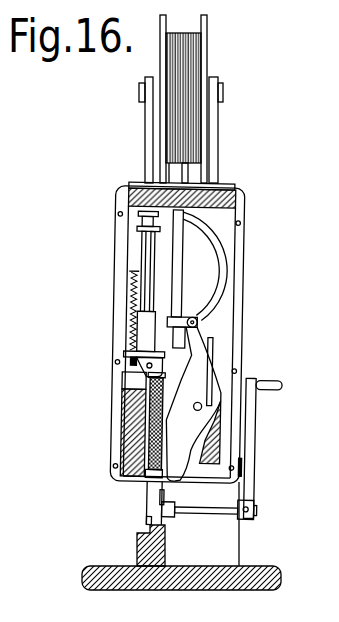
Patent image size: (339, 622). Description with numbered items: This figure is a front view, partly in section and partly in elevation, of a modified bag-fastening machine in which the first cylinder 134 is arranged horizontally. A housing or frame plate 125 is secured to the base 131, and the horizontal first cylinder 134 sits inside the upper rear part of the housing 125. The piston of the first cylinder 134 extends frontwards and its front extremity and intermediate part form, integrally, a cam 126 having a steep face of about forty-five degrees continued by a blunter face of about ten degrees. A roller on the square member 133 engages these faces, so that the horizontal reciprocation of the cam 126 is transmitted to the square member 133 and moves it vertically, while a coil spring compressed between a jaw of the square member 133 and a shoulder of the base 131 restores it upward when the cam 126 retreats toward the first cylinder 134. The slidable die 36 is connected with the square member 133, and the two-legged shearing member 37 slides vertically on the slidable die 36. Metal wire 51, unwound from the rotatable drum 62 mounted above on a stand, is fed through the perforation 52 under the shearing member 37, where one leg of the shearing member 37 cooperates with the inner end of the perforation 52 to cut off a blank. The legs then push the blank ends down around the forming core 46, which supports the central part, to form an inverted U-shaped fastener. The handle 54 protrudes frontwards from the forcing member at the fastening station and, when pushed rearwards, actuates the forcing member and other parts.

The metal wire 51 is at (173, 60).
The rotatable drum 62 is at (203, 63).
The housing or frame plate 125 is at (246, 222).
The square member 133 is at (134, 253).
The cam 126 is at (207, 277).
The first cylinder 134 is at (218, 306).
The slidable die 36 is at (130, 407).
The shearing member 37 is at (155, 432).
The perforation 52 is at (155, 462).
The forming core 46 is at (146, 481).
The handle 54 is at (258, 428).
The base 131 is at (137, 557).